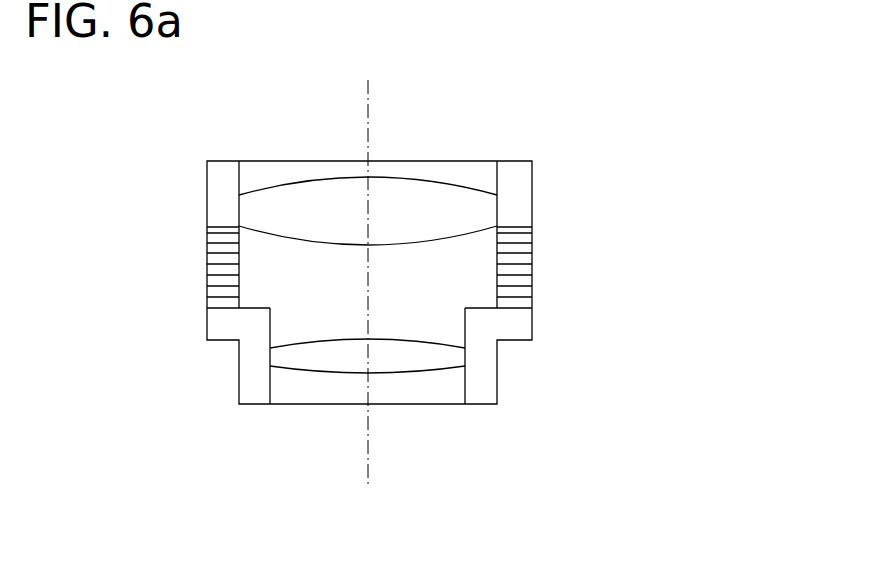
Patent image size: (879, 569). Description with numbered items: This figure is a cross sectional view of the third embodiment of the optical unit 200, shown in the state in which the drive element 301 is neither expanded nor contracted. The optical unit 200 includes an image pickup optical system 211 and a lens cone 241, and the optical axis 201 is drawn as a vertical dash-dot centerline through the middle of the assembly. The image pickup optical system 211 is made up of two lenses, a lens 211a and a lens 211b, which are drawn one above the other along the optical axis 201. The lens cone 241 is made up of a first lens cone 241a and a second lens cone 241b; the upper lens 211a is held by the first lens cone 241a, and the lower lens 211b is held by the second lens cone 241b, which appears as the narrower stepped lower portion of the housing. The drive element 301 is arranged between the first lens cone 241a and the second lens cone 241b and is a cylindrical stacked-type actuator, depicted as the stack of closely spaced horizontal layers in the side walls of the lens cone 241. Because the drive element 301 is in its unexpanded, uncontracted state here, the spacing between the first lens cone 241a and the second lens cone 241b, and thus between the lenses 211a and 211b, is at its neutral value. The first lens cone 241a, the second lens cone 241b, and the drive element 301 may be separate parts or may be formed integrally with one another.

The optical unit 200 is at (766, 130).
The optical axis 201 is at (368, 80).
The image pickup optical system 211 is at (648, 193).
The lens 211a is at (467, 211).
The lens 211b is at (446, 360).
The lens cone 241 is at (634, 130).
The first lens cone 241a is at (517, 158).
The second lens cone 241b is at (497, 404).
The drive element 301 is at (207, 279).